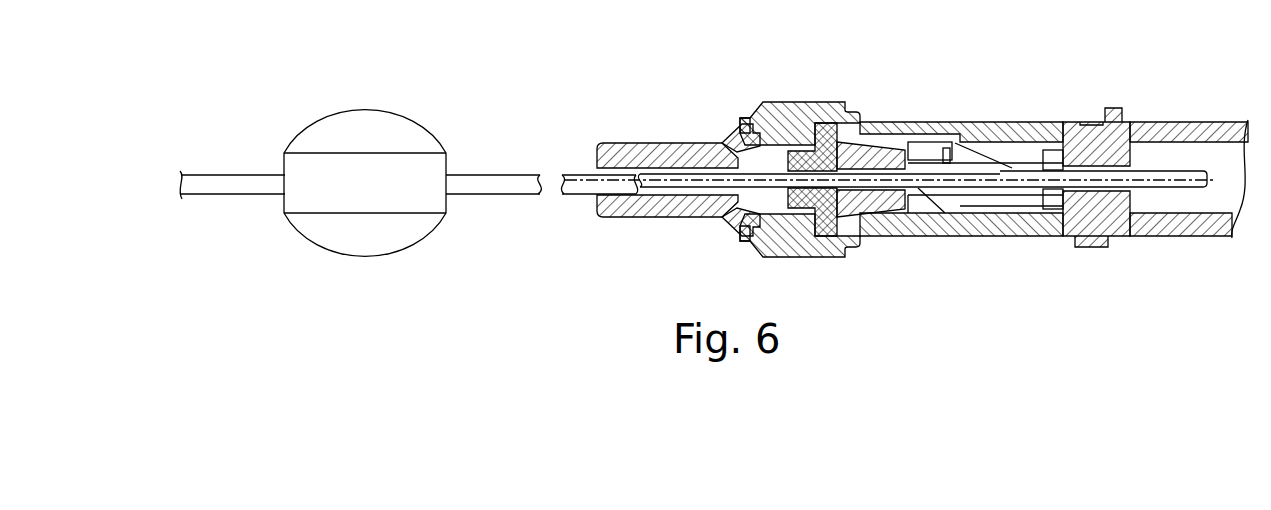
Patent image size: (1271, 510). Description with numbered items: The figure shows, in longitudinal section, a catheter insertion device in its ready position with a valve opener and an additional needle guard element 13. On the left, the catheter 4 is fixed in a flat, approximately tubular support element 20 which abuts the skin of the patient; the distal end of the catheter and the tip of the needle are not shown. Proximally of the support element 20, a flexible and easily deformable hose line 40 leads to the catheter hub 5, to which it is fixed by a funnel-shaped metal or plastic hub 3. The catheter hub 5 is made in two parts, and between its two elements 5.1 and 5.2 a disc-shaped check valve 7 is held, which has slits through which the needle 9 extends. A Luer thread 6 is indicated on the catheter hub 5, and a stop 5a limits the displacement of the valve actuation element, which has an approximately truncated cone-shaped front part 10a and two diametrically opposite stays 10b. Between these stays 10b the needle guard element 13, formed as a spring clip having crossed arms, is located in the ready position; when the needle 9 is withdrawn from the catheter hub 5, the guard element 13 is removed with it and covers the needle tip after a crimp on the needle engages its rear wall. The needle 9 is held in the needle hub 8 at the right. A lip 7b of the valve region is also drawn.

The hub 3 is at (737, 150).
The catheter 4 is at (257, 187).
The catheter hub 5 is at (1003, 118).
The element of the catheter hub 5.1 is at (627, 150).
The element of the catheter hub 5.2 is at (970, 128).
The stop 5a is at (910, 128).
The Luer thread 6 is at (1083, 118).
The check valve 7 is at (788, 246).
The nut lip 7b is at (763, 249).
The needle hub 8 is at (1202, 117).
The needle 9 is at (1157, 118).
The front part 10a is at (908, 236).
The stays 10b is at (1000, 236).
The needle guard element 13 is at (1047, 236).
The support element 20 is at (420, 112).
The hose line 40 is at (510, 188).